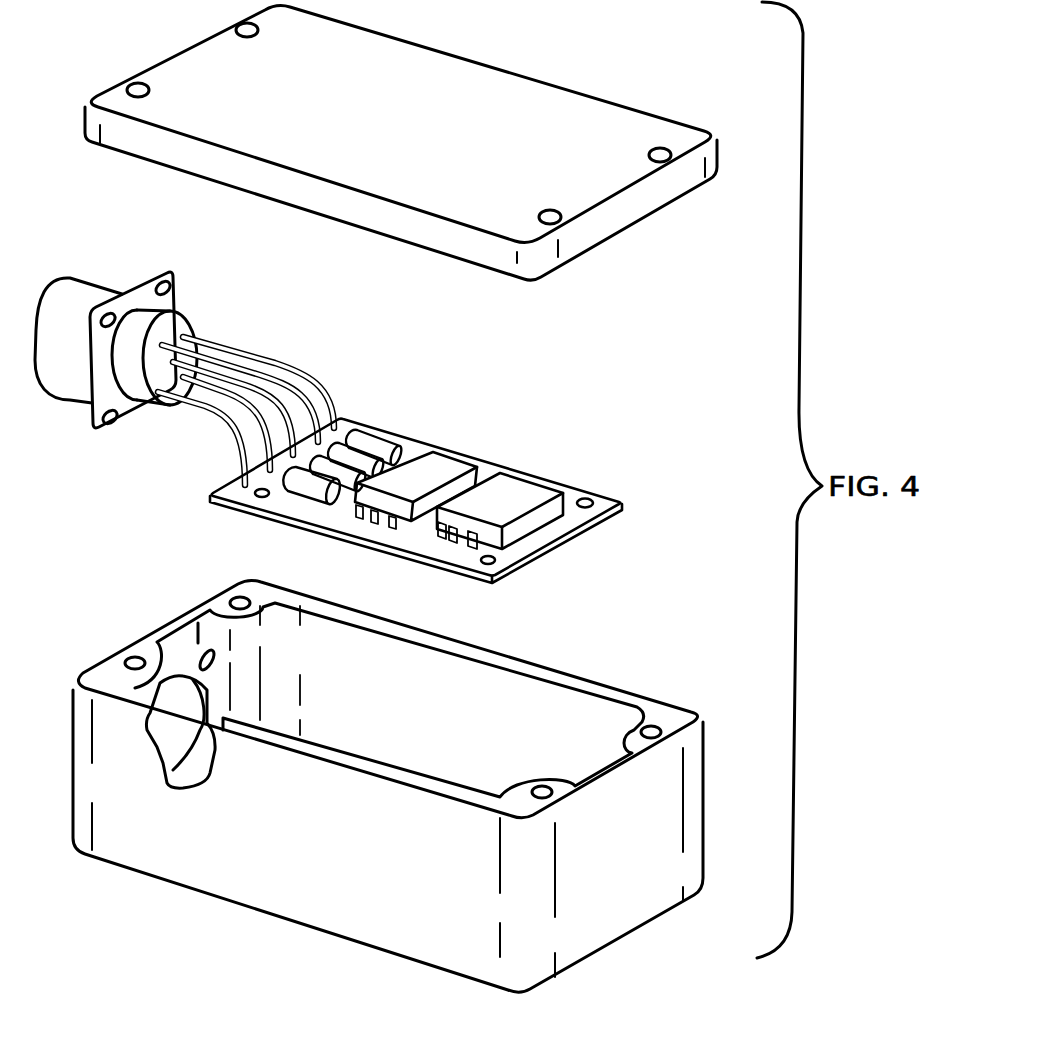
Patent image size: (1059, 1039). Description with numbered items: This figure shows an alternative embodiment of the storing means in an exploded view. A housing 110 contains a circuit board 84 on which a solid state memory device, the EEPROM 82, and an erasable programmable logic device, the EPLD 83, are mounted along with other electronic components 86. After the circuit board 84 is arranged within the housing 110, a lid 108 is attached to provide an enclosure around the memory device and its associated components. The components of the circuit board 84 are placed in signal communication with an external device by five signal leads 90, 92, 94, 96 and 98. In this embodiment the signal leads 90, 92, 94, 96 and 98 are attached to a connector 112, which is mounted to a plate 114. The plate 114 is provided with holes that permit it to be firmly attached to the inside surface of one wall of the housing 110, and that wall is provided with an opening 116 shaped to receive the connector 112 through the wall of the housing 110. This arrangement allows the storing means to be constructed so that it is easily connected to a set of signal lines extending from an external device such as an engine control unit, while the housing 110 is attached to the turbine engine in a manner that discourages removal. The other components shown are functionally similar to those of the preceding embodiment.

The EEPROM 82 is at (433, 465).
The EPLD 83 is at (523, 488).
The circuit board 84 is at (573, 520).
The electronic components 86 is at (390, 455).
The lead 90 is at (300, 407).
The lead 92 is at (210, 348).
The lead 94 is at (300, 407).
The lead 96 is at (243, 405).
The lead 98 is at (280, 362).
The lid 108 is at (543, 93).
The housing 110 is at (672, 808).
The connector 112 is at (92, 290).
The plate 114 is at (172, 272).
The opening 116 is at (200, 717).